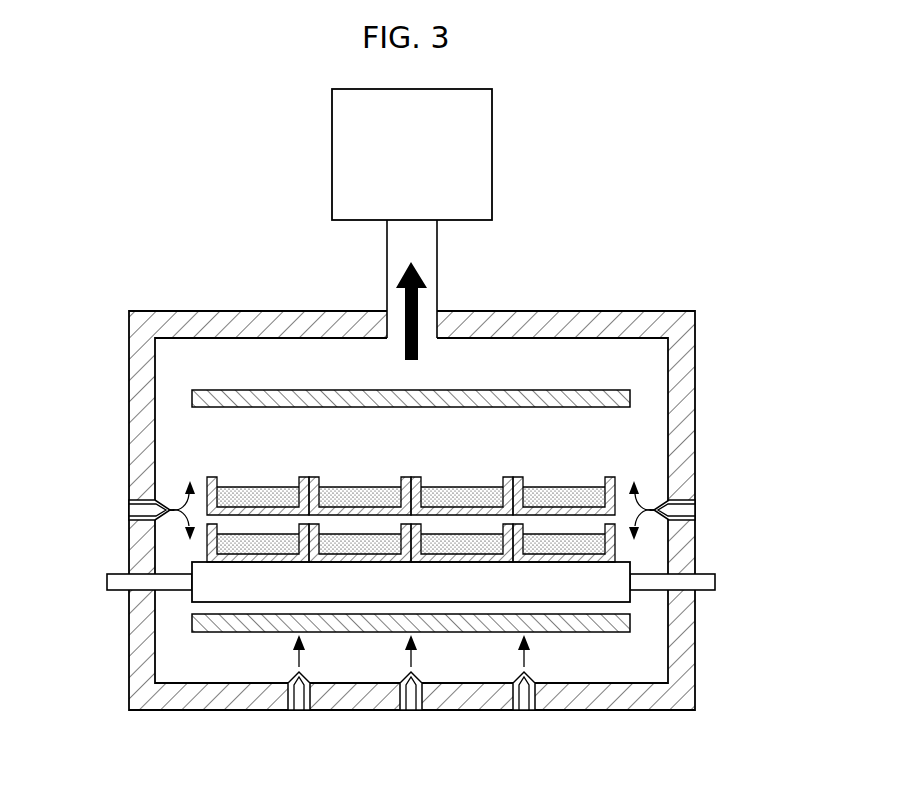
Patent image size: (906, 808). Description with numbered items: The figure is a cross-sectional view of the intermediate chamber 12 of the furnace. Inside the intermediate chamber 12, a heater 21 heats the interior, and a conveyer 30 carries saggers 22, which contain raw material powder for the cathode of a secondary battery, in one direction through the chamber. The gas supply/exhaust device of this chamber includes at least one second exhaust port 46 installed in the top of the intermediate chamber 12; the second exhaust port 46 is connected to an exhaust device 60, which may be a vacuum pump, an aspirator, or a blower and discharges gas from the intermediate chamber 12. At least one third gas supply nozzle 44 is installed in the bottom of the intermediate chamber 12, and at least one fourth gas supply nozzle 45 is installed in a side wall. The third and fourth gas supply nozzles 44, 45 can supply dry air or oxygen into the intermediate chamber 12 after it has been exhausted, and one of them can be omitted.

The intermediate chamber 12 is at (648, 323).
The heater 21 is at (289, 390).
The sagger 22 is at (516, 477).
The conveyer 30 is at (623, 595).
The third gas supply nozzle 44 is at (411, 708).
The fourth gas supply nozzle 45 is at (140, 510).
The second exhaust port 46 is at (428, 320).
The exhaust device 60 is at (492, 153).